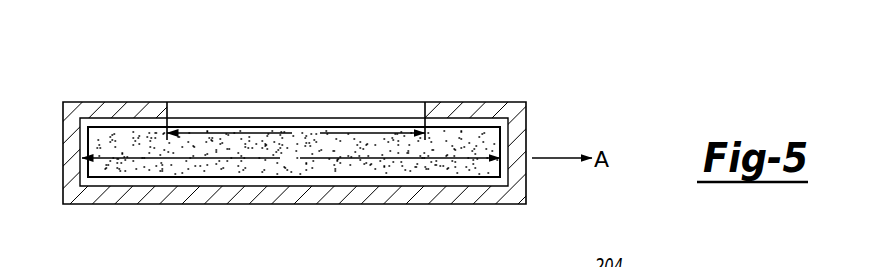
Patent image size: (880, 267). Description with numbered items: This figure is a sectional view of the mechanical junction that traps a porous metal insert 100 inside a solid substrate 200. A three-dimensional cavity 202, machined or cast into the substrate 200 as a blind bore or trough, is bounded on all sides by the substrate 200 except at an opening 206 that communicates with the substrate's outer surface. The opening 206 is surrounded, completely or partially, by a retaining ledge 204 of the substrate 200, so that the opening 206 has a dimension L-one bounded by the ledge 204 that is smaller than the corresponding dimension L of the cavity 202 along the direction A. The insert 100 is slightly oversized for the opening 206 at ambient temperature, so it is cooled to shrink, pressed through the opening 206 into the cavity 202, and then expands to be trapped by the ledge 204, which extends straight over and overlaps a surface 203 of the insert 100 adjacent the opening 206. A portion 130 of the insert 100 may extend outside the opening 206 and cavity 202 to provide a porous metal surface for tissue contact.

The porous metal insert 100 is at (436, 162).
The portion of the insert 130 is at (369, 256).
The solid substrate 200 is at (141, 101).
The cavity 202 is at (82, 170).
The surface of the porous metal insert 203 is at (262, 128).
The retaining ledge 204 is at (462, 102).
The opening 206 is at (170, 111).